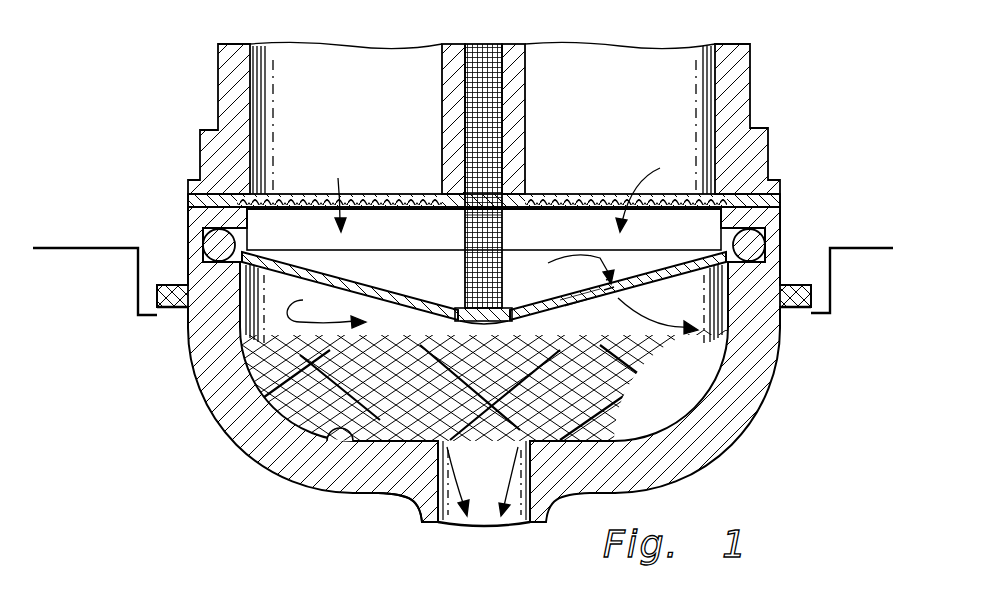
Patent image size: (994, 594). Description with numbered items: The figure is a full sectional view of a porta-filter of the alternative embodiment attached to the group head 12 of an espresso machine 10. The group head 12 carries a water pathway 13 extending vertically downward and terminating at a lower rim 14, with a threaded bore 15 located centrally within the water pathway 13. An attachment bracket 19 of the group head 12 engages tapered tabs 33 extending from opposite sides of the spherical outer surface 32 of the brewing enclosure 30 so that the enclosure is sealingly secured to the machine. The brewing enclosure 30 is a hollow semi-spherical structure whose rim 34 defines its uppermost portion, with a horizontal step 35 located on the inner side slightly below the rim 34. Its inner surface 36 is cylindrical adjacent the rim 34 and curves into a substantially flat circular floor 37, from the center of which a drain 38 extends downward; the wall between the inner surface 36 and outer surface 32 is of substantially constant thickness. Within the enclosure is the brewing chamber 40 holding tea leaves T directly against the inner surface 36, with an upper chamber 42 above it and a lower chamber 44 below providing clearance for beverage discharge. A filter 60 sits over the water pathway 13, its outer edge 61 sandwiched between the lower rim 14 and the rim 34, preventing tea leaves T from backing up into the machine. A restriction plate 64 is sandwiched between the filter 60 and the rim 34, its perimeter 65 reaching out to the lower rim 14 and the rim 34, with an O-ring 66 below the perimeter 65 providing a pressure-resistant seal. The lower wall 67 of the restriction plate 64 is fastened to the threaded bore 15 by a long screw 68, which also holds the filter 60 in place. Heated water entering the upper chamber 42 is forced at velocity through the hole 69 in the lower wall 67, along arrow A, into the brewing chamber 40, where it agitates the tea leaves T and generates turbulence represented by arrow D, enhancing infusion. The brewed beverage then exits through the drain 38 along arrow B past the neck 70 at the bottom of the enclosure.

The espresso machine 10 is at (842, 110).
The group head 12 is at (218, 103).
The water pathway 13 is at (345, 92).
The lower rim 14 is at (188, 182).
The threaded bore 15 is at (475, 46).
The attachment bracket 19 is at (150, 262).
The brewing enclosure 30 is at (145, 434).
The outer surface 32 is at (204, 390).
The tapered tabs 33 is at (157, 294).
The rim 34 is at (768, 250).
The step 35 is at (780, 328).
The inner surface 36 is at (730, 345).
The floor 37 is at (325, 448).
The drain 38 is at (497, 470).
The brewing chamber 40 is at (427, 338).
The upper chamber 42 is at (431, 242).
The lower chamber 44 is at (446, 522).
The filter 60 is at (302, 196).
The outer edge 61 is at (188, 199).
The restriction plate 64 is at (782, 206).
The perimeter 65 is at (188, 222).
The O-ring 66 is at (204, 244).
The lower wall 67 is at (384, 288).
The long screw 68 is at (503, 220).
The hole 69 is at (612, 275).
The neck 70 is at (420, 514).
The arrow A is at (342, 178).
The flow direction B is at (472, 522).
The arrow D is at (684, 302).
The tea leaves T is at (548, 392).